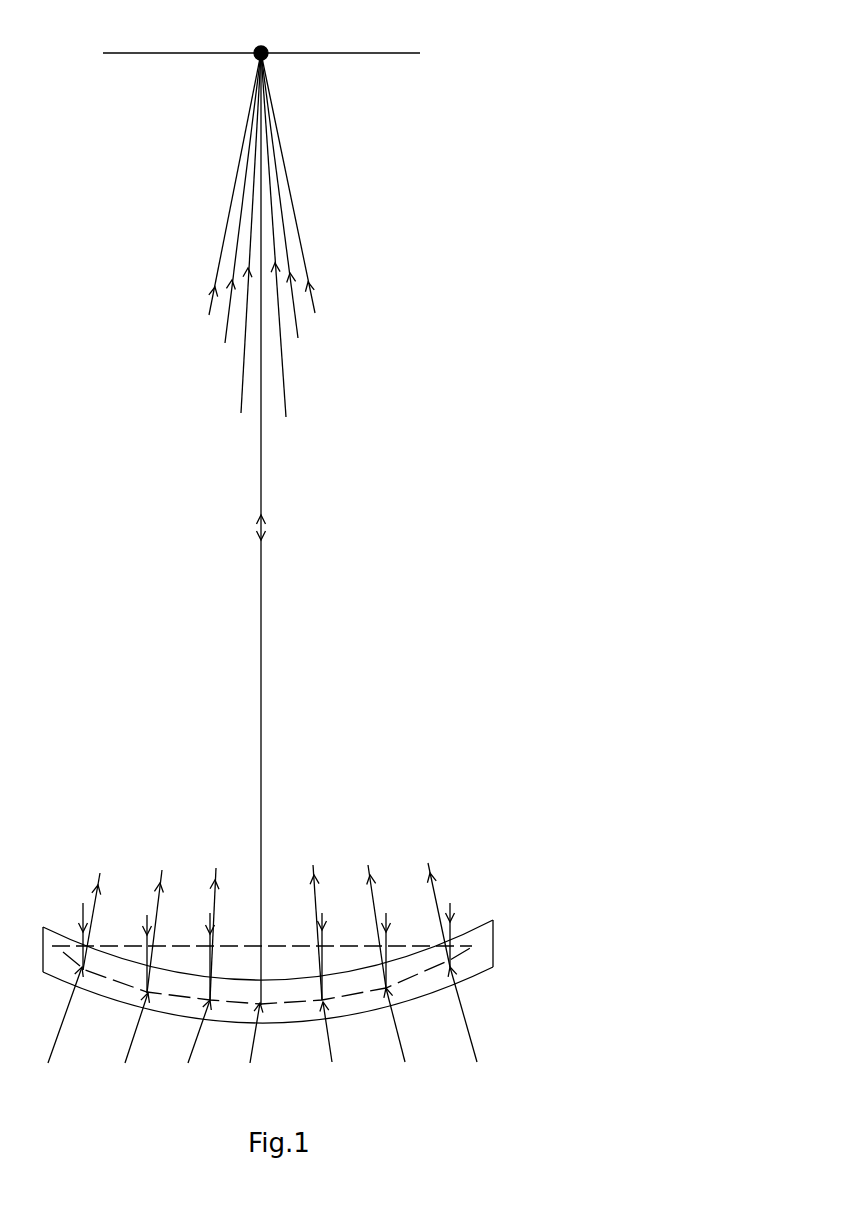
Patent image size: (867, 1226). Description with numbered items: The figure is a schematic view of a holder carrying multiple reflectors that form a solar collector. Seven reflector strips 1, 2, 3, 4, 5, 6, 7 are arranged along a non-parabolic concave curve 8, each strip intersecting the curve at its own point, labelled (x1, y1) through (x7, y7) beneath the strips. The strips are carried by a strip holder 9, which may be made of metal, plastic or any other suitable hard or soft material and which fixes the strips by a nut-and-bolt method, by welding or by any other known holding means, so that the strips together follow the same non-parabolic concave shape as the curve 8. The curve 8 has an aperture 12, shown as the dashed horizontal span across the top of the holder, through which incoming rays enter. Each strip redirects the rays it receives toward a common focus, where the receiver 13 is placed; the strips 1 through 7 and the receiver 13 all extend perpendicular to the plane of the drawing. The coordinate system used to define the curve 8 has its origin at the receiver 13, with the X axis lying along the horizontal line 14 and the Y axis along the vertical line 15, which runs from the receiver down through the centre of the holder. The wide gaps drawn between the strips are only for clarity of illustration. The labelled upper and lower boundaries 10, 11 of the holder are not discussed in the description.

The reflector strip 1 is at (98, 978).
The reflector strip 2 is at (158, 995).
The reflector strip 3 is at (222, 1002).
The reflector strip 4 is at (275, 1003).
The reflector strip 5 is at (307, 1005).
The reflector strip 6 is at (367, 993).
The reflector strip 7 is at (432, 980).
The non-parabolic concave curve 8 is at (62, 958).
The strip holder 9 is at (493, 942).
The upper reflective surface of reflector 10 is at (474, 925).
The lower surface of reflector 11 is at (485, 972).
The aperture 12 is at (247, 946).
The receiver 13 is at (260, 37).
The horizontal line 14 is at (261, 40).
The vertical line 15 is at (274, 529).